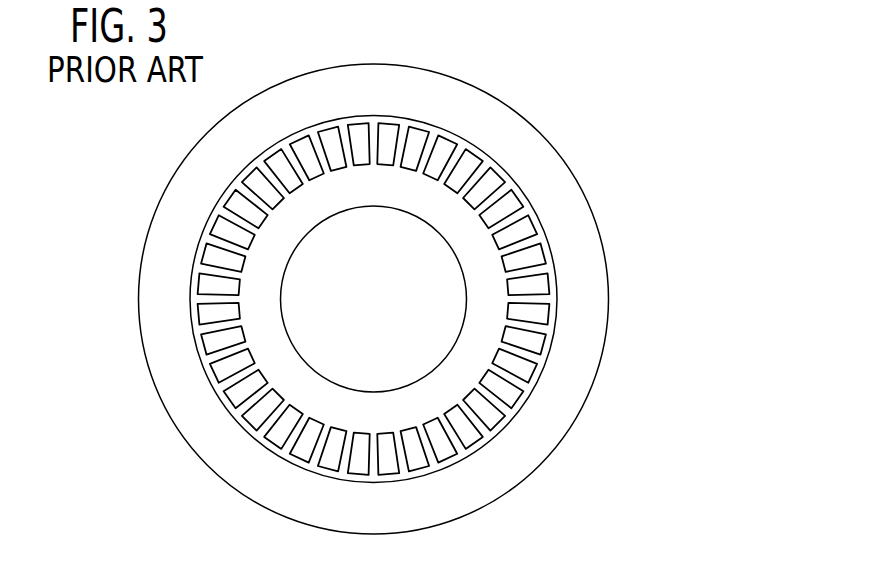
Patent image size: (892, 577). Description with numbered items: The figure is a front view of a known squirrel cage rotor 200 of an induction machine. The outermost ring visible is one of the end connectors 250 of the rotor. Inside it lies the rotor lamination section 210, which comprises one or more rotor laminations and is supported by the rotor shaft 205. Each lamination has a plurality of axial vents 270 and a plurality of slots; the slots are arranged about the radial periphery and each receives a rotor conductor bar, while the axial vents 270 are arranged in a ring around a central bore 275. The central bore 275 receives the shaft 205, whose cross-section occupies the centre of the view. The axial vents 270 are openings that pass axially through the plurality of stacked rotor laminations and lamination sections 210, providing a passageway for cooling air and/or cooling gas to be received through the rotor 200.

The squirrel cage rotor 200 is at (616, 141).
The end connector 250 is at (492, 118).
The rotor lamination section 210 is at (238, 410).
The axial vents 270 is at (218, 285).
The central bore 275 is at (467, 298).
The rotor shaft 205 is at (398, 312).